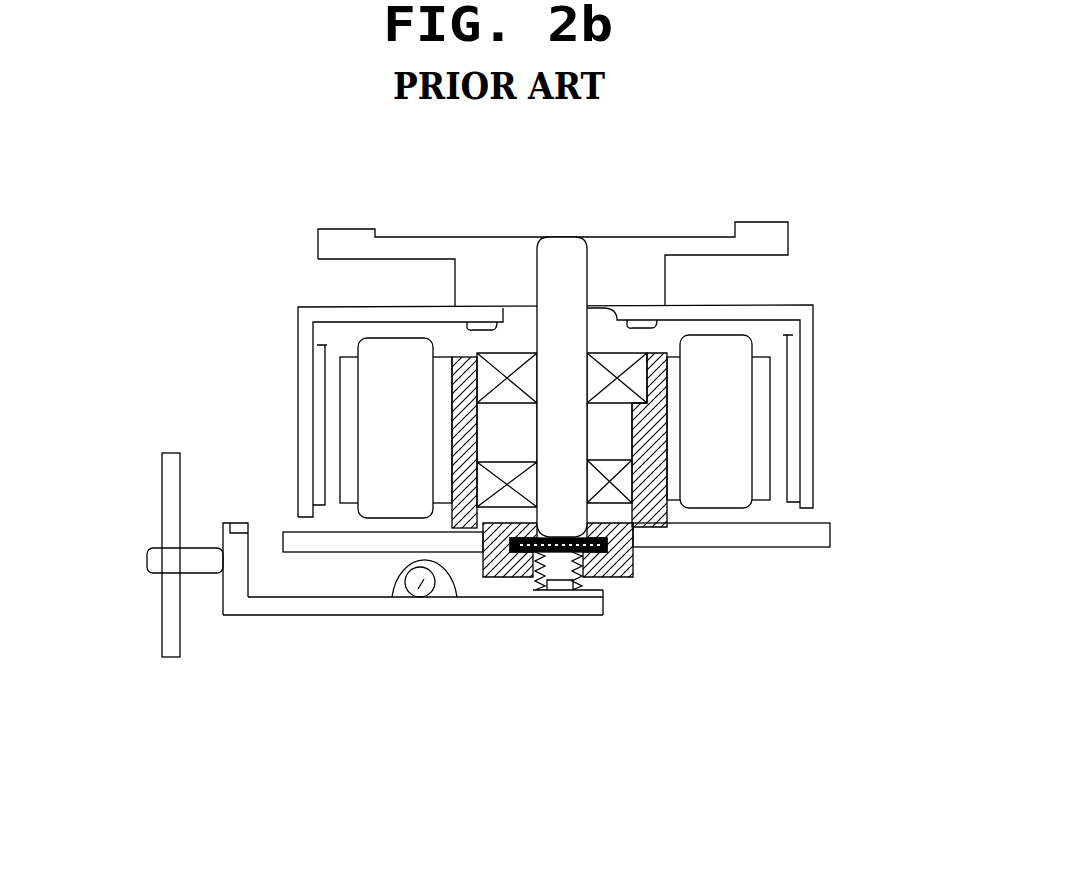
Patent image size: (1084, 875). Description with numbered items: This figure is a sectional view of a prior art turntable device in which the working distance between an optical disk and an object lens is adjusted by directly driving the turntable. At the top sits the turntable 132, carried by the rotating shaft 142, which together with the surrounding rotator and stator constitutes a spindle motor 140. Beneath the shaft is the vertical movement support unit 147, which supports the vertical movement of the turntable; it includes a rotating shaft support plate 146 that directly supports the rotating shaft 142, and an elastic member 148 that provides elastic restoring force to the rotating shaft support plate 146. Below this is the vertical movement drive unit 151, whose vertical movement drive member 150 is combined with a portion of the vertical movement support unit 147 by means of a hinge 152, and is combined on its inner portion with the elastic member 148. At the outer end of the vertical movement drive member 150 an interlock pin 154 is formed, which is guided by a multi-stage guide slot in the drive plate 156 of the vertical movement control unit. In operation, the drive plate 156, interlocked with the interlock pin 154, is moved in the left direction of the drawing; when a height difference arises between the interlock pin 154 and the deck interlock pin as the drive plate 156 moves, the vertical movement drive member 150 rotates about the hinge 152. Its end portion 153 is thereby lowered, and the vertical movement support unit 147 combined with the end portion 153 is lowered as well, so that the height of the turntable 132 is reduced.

The turntable 132 is at (640, 248).
The spindle motor 140 is at (822, 292).
The rotating shaft 142 is at (562, 256).
The rotating shaft support plate 146 is at (633, 548).
The vertical movement support unit 147 is at (653, 587).
The elastic member 148 is at (588, 590).
The vertical movement drive member 150 is at (329, 616).
The vertical movement drive unit 151 is at (375, 642).
The hinge 152 is at (421, 598).
The end portion 153 is at (520, 616).
The interlock pin 154 is at (185, 631).
The drive plate 156 is at (162, 611).